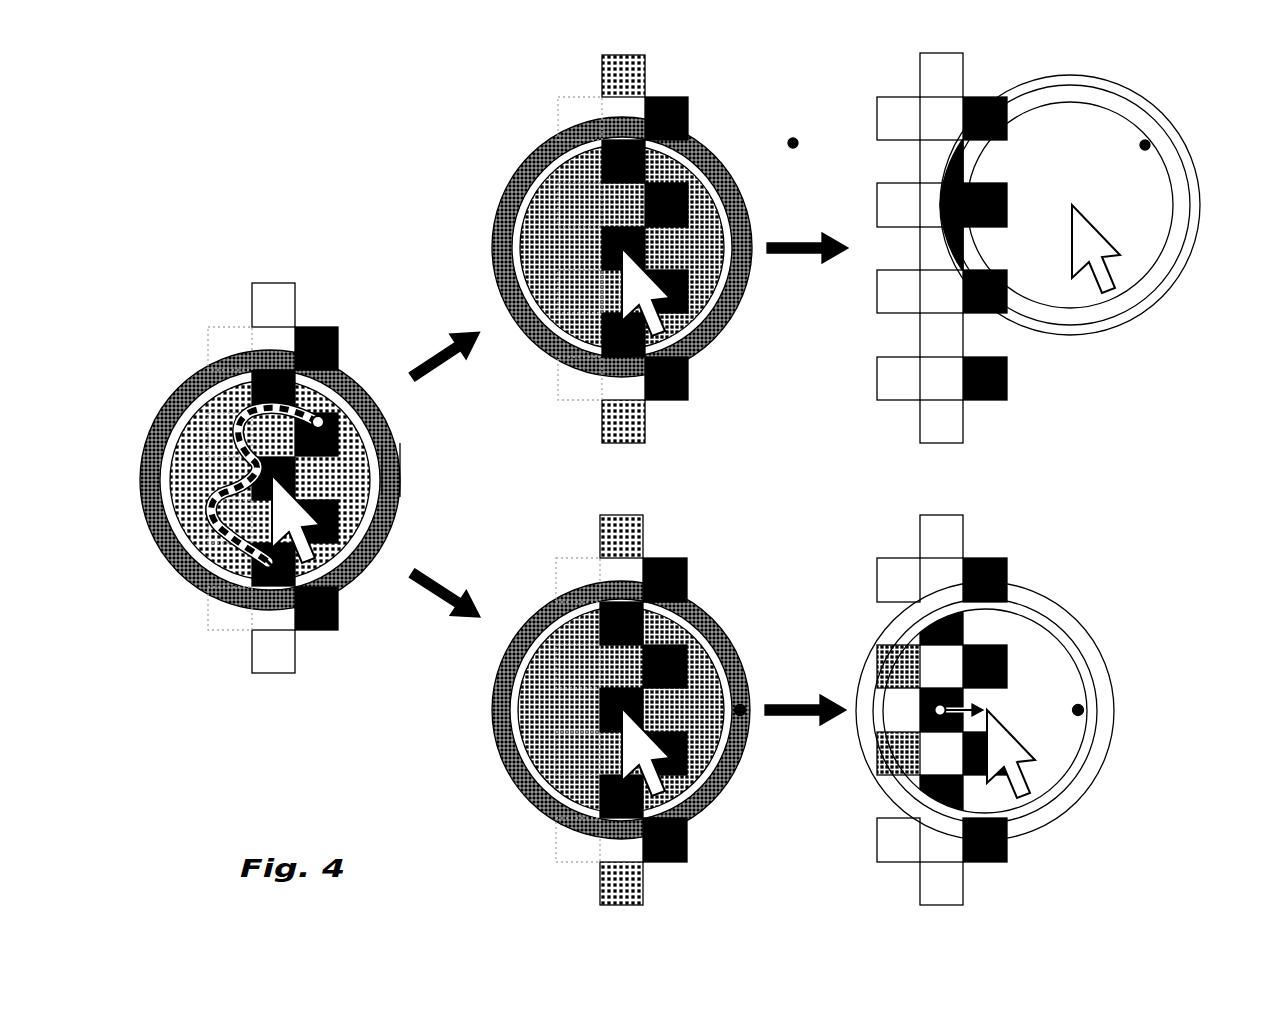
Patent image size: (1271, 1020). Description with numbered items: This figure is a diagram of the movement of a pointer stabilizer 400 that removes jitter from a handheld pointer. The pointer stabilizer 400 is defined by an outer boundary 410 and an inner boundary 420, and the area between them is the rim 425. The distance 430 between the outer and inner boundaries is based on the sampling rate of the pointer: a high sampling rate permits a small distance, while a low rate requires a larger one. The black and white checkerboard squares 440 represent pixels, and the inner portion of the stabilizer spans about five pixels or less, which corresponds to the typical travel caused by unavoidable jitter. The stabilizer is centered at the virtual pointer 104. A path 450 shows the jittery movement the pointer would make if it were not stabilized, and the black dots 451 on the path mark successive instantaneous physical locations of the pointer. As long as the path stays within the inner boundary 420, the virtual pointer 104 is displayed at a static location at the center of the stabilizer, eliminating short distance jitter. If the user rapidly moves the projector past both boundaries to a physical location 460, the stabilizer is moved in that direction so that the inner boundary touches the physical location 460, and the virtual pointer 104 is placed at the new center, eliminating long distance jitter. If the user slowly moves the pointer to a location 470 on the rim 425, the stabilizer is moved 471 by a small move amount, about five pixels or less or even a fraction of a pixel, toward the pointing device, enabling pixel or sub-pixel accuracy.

The virtual pointer 104 is at (295, 488).
The pointer stabilizer 400 is at (540, 238).
The outer boundary 410 is at (162, 410).
The inner boundary 420 is at (172, 520).
The rim 425 is at (507, 683).
The distance 430 is at (388, 493).
The checkerboard squares 440 is at (270, 337).
The path 450 is at (228, 475).
The black dots 451 is at (252, 552).
The physical location 460 is at (793, 140).
The location 470 is at (745, 708).
The move 471 is at (943, 704).